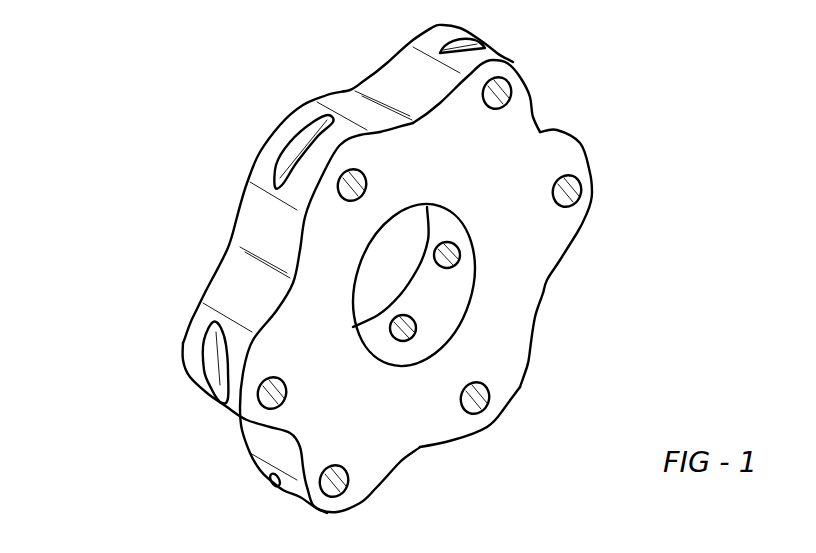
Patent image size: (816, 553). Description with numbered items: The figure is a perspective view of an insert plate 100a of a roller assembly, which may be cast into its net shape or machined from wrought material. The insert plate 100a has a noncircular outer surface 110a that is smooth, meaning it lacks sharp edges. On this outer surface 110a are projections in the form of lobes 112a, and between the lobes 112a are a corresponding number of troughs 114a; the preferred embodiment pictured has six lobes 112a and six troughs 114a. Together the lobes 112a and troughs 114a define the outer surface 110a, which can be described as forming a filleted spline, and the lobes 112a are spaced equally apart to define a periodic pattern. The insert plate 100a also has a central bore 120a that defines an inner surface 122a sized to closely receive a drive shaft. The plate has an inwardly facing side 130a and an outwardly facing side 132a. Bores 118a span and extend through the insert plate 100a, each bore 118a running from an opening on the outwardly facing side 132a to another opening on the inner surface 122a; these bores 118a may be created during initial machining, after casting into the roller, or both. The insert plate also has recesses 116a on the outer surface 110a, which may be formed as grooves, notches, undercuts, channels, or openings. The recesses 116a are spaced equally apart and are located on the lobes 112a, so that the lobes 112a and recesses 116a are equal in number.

The insert plate 100a is at (162, 96).
The outer surface 110a is at (264, 207).
The lobes 112a is at (507, 67).
The troughs 114a is at (543, 132).
The recesses 116a is at (210, 366).
The bores 118a is at (461, 255).
The central bore 120a is at (388, 263).
The inner surface 122a is at (392, 360).
The inwardly facing side 130a is at (205, 287).
The outwardly facing side 132a is at (440, 128).